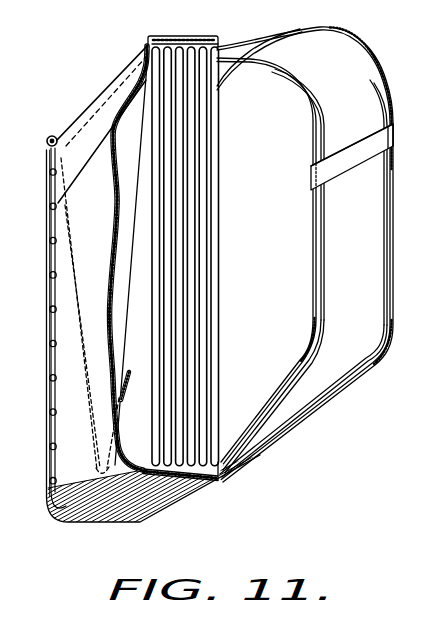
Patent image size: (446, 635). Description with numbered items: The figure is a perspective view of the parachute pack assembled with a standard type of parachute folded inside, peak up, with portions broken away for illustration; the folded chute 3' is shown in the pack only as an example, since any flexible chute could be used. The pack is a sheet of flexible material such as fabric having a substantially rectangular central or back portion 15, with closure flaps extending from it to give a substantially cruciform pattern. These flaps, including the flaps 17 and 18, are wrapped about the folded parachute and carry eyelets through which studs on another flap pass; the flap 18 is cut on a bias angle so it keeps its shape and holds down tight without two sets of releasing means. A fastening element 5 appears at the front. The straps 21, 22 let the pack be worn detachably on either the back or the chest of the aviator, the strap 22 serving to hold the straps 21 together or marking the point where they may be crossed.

The bellows body 3' is at (163, 258).
The fastening hook 5 is at (123, 396).
The back portion 15 is at (222, 473).
The closure flap 17 is at (70, 397).
The closure flap 18 is at (102, 124).
The straps 21 is at (382, 112).
The strap 22 is at (351, 160).